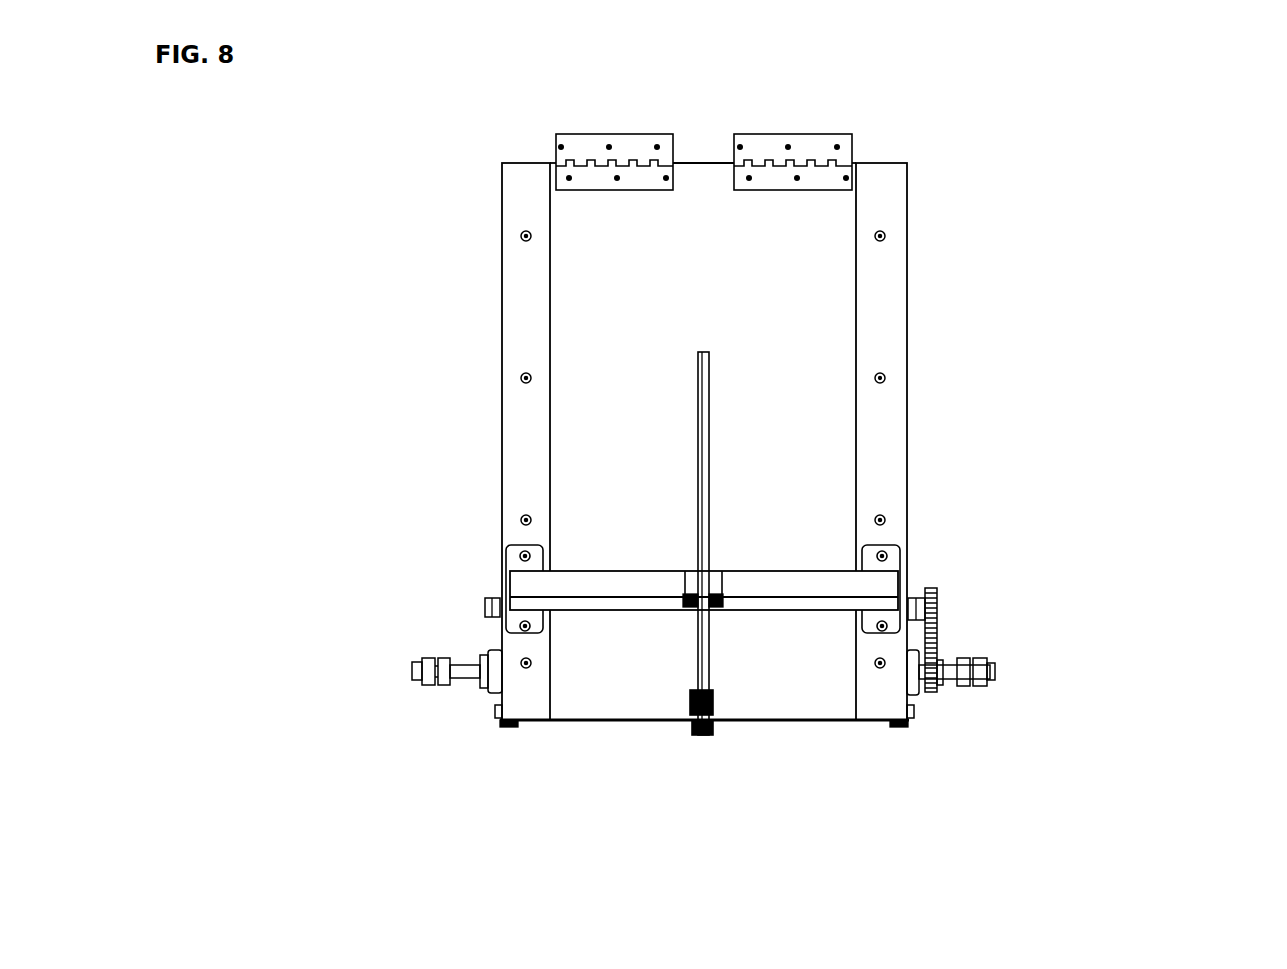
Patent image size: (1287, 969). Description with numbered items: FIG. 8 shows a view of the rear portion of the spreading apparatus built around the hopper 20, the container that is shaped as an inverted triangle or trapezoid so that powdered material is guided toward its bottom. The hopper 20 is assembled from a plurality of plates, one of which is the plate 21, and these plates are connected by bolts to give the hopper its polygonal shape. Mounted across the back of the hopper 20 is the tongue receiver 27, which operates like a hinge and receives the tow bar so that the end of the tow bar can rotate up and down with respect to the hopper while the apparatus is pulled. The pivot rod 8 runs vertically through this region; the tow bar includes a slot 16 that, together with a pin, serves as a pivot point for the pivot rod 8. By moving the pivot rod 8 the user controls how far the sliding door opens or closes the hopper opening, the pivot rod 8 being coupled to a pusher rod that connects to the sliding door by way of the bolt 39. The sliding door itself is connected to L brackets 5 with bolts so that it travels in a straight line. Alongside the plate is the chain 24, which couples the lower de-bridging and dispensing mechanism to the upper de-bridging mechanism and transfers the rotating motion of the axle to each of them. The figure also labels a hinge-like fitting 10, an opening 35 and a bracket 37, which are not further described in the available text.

The L bracket 5 is at (871, 759).
The pivot rod 8 is at (703, 465).
The hinge 10 is at (629, 116).
The slot 16 is at (871, 548).
The hopper 20 is at (502, 192).
The plate 21 is at (907, 163).
The chain 24 is at (1096, 624).
The tongue receiver 27 is at (503, 582).
The mounting hole 35 is at (886, 374).
The bracket 37 is at (609, 495).
The bolt 39 is at (538, 692).